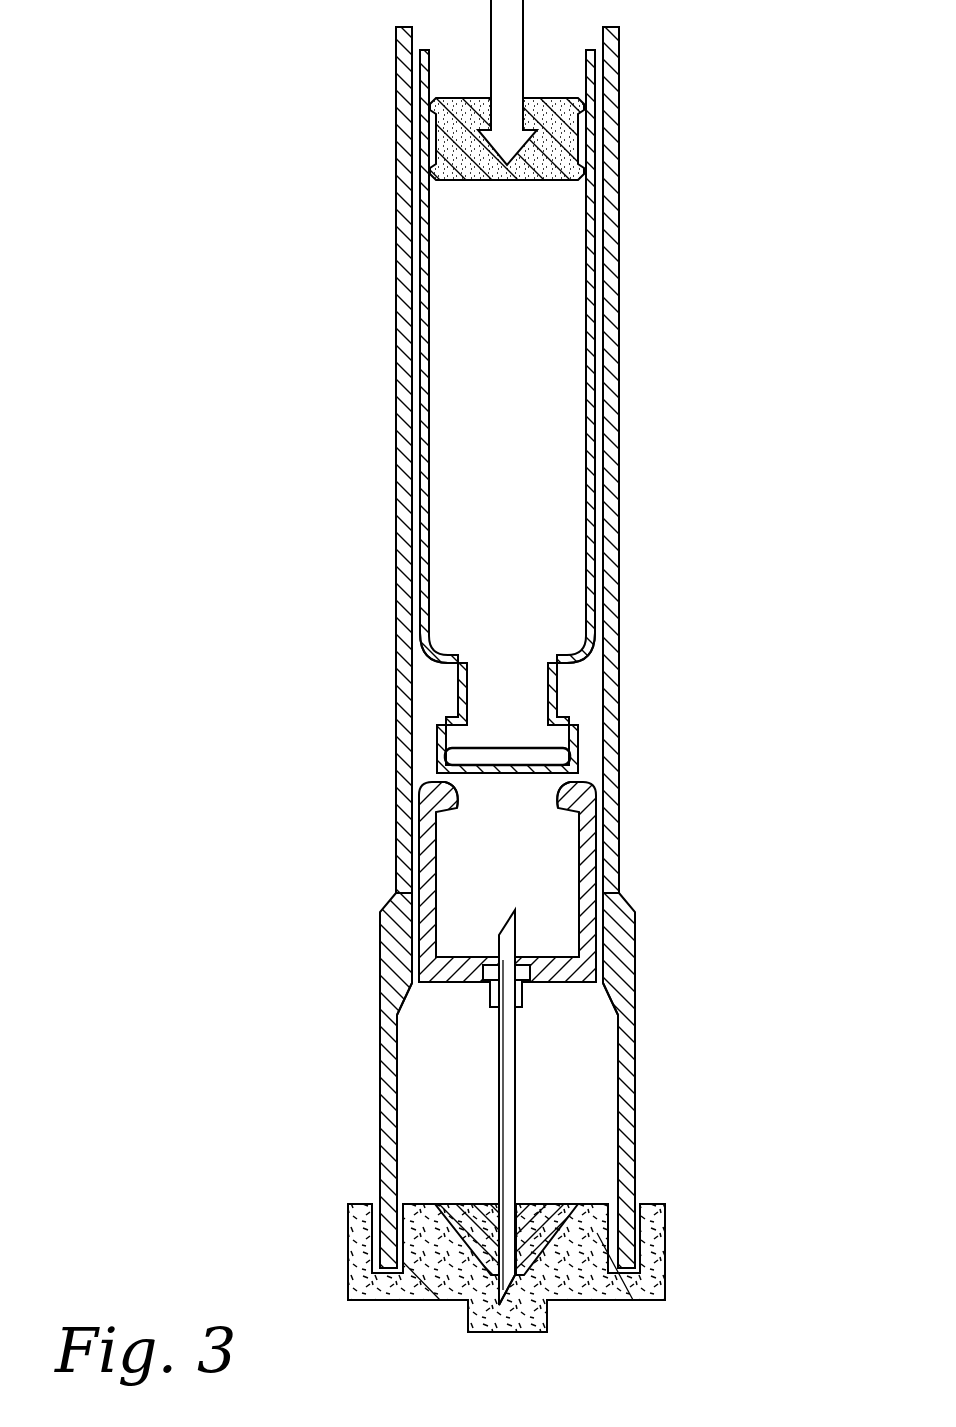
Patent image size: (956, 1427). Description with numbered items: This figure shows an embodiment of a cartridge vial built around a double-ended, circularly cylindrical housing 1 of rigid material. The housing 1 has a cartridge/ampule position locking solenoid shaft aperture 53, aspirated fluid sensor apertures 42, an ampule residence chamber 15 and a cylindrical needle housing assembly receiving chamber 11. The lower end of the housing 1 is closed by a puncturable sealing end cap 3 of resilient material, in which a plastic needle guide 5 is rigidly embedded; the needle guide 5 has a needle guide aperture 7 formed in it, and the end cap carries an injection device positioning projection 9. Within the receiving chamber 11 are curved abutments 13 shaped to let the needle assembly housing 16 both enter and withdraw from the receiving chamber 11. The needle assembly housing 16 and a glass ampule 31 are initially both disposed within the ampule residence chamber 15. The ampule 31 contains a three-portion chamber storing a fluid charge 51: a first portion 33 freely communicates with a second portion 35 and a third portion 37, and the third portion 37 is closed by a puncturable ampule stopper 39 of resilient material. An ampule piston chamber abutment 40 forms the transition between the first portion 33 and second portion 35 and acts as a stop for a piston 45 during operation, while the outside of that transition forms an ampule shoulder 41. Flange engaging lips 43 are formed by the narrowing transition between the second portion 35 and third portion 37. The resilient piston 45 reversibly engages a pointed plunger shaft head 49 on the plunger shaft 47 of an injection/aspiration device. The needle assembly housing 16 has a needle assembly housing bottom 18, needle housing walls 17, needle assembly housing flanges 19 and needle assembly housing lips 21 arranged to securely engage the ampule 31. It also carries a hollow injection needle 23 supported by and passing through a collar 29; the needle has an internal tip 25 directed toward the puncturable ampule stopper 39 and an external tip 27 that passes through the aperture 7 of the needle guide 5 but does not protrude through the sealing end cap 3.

The cylindrical housing 1 is at (400, 405).
The sealing end cap 3 is at (349, 1240).
The needle guide 5 is at (548, 1203).
The needle guide aperture 7 is at (490, 1203).
The injection device positioning projection 9 is at (468, 1316).
The needle housing assembly receiving chamber 11 is at (428, 1108).
The curved abutments 13 is at (407, 1000).
The ampule residence chamber 15 is at (440, 740).
The needle assembly housing 16 is at (458, 984).
The needle housing walls 17 is at (402, 893).
The needle assembly housing bottom 18 is at (456, 962).
The needle assembly housing flanges 19 is at (440, 800).
The needle assembly housing lips 21 is at (576, 806).
The hollow injection needle 23 is at (515, 1117).
The internal tip 25 is at (505, 915).
The external tip 27 is at (522, 1278).
The collar 29 is at (527, 1007).
The ampule 31 is at (596, 492).
The first portion 33 is at (425, 325).
The second portion 35 is at (556, 675).
The third portion 37 is at (590, 724).
The ampule stopper 39 is at (580, 755).
The ampule piston chamber abutment 40 is at (570, 612).
The ampule shoulder 41 is at (425, 664).
The aspirated fluid sensor apertures 42 is at (405, 880).
The flange engaging lips 43 is at (436, 716).
The piston 45 is at (512, 192).
The plunger shaft 47 is at (491, 10).
The plunger shaft head 49 is at (545, 150).
The fluid charge 51 is at (530, 293).
The locking solenoid shaft aperture 53 is at (610, 360).